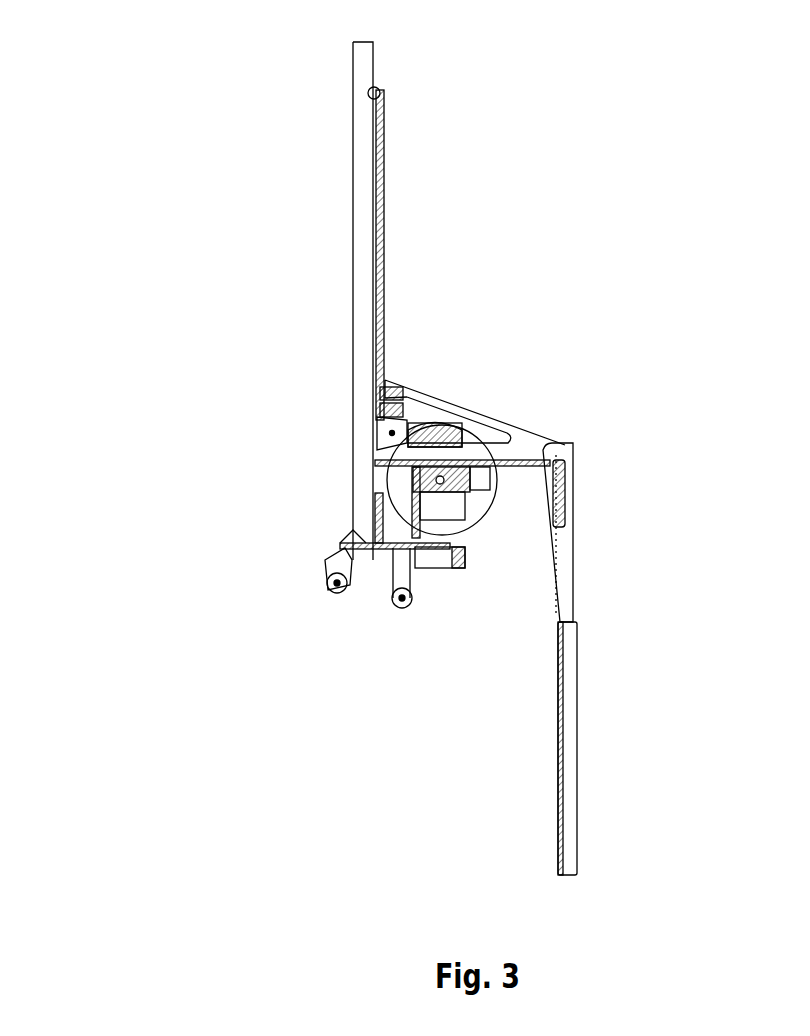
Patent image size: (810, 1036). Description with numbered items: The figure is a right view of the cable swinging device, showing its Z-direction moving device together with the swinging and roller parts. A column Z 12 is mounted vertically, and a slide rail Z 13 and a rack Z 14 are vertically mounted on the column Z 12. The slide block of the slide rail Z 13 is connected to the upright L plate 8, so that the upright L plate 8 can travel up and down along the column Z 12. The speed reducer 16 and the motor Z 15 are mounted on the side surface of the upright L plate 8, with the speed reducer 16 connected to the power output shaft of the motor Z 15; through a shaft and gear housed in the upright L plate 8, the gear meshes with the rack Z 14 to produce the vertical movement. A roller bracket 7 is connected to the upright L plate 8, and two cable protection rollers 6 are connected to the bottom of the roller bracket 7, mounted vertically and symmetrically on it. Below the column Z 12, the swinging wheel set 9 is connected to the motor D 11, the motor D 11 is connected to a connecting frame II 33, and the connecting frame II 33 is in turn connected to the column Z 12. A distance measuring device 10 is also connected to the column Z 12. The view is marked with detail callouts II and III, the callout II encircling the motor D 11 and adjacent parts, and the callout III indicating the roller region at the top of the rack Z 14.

The roller (detail III) III is at (381, 88).
The rack Z 14 is at (385, 118).
The slide rail Z 13 is at (382, 378).
The speed reducer 16 is at (390, 431).
The motor Z 15 is at (430, 415).
The upright L plate 8 is at (533, 443).
The roller bracket 7 is at (572, 537).
The cable protection roller 6 is at (563, 735).
The detail II is at (500, 520).
The column Z 12 is at (363, 508).
The connecting frame II 33 is at (350, 537).
The motor D 11 is at (437, 558).
The swinging wheel set 9 is at (407, 607).
The distance measuring device 10 is at (333, 592).